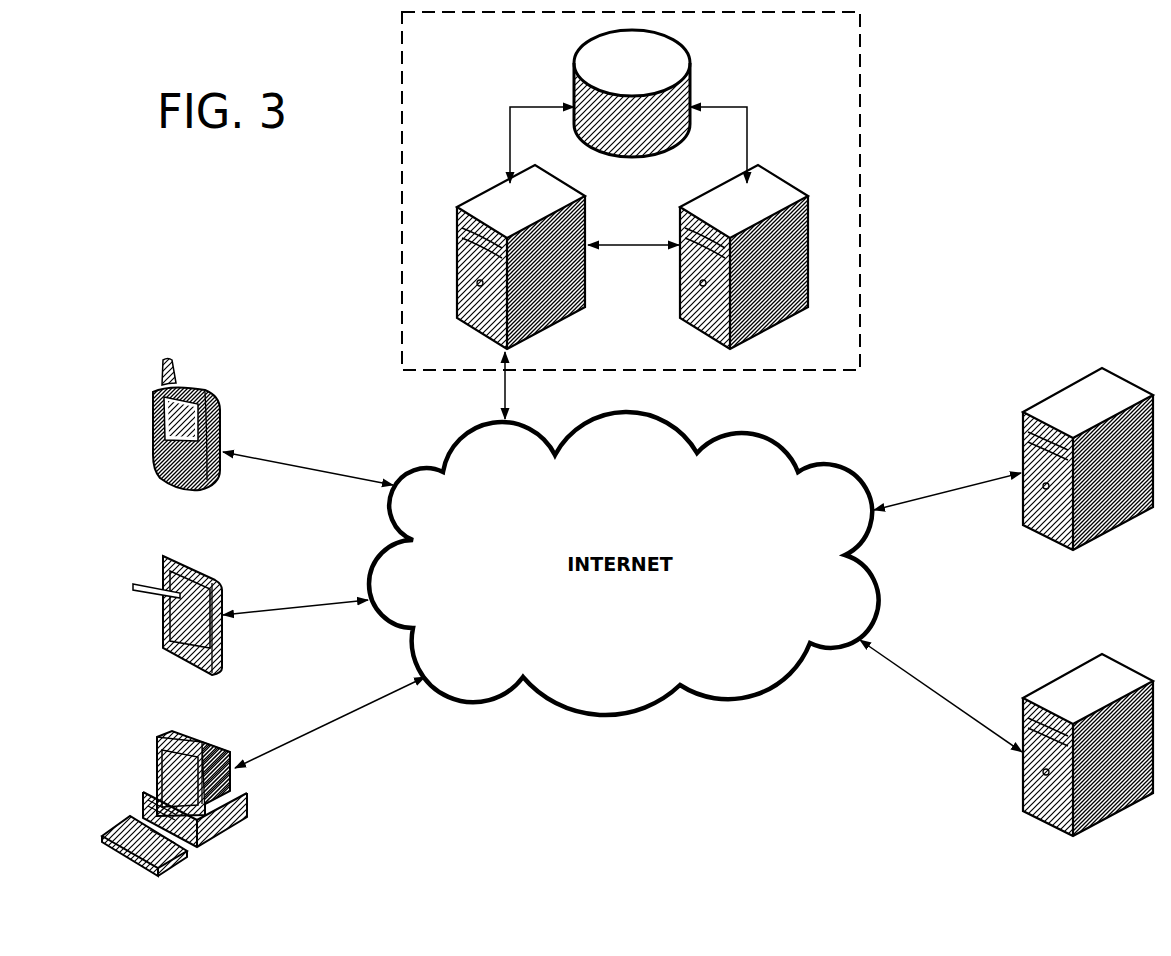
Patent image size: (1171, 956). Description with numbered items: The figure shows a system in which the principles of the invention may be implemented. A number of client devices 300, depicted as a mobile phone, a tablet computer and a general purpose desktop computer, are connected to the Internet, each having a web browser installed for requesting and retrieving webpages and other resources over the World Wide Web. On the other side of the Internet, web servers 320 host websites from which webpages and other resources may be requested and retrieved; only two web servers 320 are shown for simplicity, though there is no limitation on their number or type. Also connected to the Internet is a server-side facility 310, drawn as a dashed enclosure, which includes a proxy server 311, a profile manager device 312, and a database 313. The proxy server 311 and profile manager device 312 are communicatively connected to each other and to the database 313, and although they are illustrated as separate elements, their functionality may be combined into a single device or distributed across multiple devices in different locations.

The client device 300 is at (202, 618).
The server-side facility 310 is at (661, 191).
The proxy server 311 is at (502, 257).
The profile manager device 312 is at (755, 257).
The database 313 is at (654, 93).
The web server 320 is at (1088, 610).